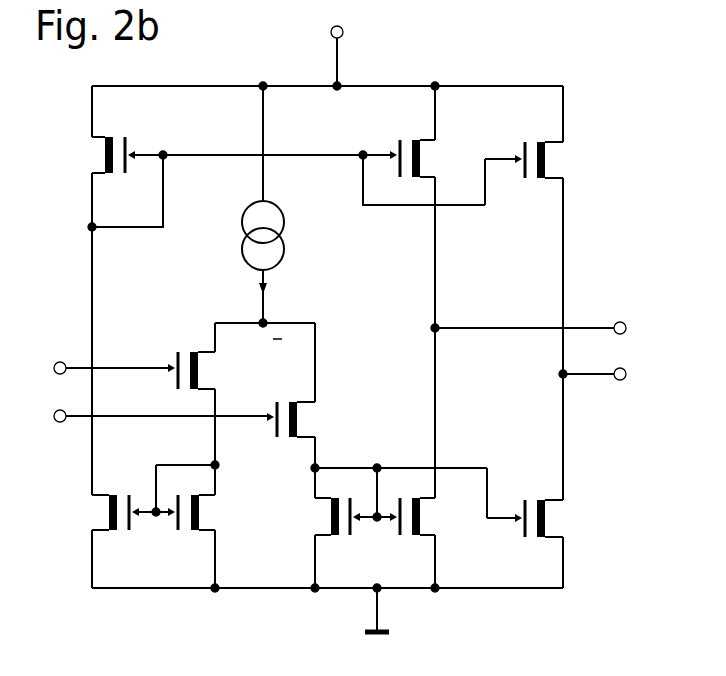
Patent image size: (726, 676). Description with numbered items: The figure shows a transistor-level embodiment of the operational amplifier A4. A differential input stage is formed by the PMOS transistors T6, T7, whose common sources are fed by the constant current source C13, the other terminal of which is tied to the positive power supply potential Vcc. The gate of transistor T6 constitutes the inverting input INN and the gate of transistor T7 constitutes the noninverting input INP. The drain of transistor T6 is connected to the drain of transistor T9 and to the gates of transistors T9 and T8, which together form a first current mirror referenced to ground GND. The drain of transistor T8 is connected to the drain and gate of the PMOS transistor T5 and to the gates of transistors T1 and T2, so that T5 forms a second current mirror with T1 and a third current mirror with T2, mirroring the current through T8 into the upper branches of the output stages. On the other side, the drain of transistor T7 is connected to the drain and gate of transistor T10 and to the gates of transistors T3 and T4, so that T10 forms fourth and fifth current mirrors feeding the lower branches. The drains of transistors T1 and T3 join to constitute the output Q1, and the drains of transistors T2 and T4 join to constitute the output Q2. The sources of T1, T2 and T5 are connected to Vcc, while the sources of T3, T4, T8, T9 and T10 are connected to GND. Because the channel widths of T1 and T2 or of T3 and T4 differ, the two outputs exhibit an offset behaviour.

The operational amplifier A4 is at (646, 531).
The positive power supply potential Vcc is at (357, 56).
The ground GND is at (397, 611).
The transistor T1 is at (406, 138).
The transistor T2 is at (531, 140).
The transistor T3 is at (410, 537).
The transistor T4 is at (532, 539).
The transistor T5 is at (122, 136).
The transistor T6 is at (184, 350).
The transistor T7 is at (283, 398).
The transistor T8 is at (122, 532).
The transistor T9 is at (188, 532).
The transistor T10 is at (342, 537).
The constant current source C13 is at (284, 221).
The output Q1 is at (625, 322).
The output Q2 is at (622, 380).
The inverting input INN is at (60, 361).
The noninverting input INP is at (60, 423).